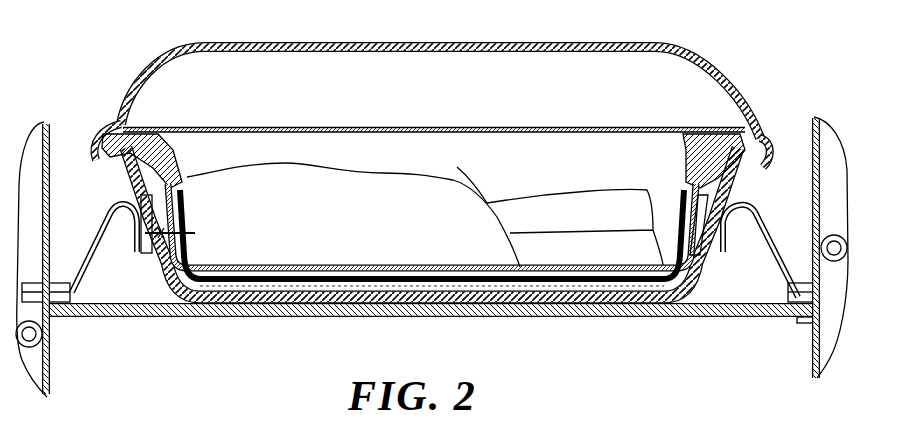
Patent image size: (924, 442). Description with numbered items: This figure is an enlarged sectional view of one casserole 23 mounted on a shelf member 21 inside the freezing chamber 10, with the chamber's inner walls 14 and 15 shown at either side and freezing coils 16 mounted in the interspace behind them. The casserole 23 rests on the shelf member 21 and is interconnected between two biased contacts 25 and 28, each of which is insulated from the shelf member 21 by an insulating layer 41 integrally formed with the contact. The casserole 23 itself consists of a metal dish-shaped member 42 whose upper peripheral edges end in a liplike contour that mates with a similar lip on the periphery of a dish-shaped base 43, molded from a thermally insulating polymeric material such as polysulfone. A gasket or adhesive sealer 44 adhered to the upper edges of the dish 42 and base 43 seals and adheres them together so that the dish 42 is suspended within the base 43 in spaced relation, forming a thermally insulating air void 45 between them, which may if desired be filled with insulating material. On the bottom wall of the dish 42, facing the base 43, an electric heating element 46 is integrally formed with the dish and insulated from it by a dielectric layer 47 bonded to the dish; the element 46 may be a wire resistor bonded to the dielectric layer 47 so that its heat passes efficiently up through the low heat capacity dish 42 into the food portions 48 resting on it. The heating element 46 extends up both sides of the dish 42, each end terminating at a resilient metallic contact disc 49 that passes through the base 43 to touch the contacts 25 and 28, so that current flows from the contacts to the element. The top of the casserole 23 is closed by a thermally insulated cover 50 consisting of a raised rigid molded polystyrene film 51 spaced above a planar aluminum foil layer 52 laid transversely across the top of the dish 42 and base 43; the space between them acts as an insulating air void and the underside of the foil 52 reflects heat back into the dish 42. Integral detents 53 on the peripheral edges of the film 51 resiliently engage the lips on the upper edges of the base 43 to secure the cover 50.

The freezing chamber 10 is at (433, 231).
The inner wall 14 is at (50, 130).
The inner wall 15 is at (812, 122).
The freezing coils 16 is at (43, 352).
The shelf member 21 is at (707, 318).
The casserole 23 is at (507, 170).
The biased contact 25 is at (110, 214).
The biased contact 28 is at (755, 201).
The insulating layer 41 is at (83, 298).
The metal dish-shaped member 42 is at (408, 267).
The base 43 is at (278, 293).
The gasket or adhesive sealer 44 is at (140, 173).
The air void 45 is at (392, 288).
The electric heating element 46 is at (593, 282).
The dielectric layer 47 is at (553, 282).
The food portions 48 is at (439, 183).
The resilient metallic contact discs 49 is at (180, 235).
The cover 50 is at (431, 94).
The rigid molded film 51 is at (695, 62).
The aluminum foil layer 52 is at (418, 127).
The detents 53 is at (96, 157).